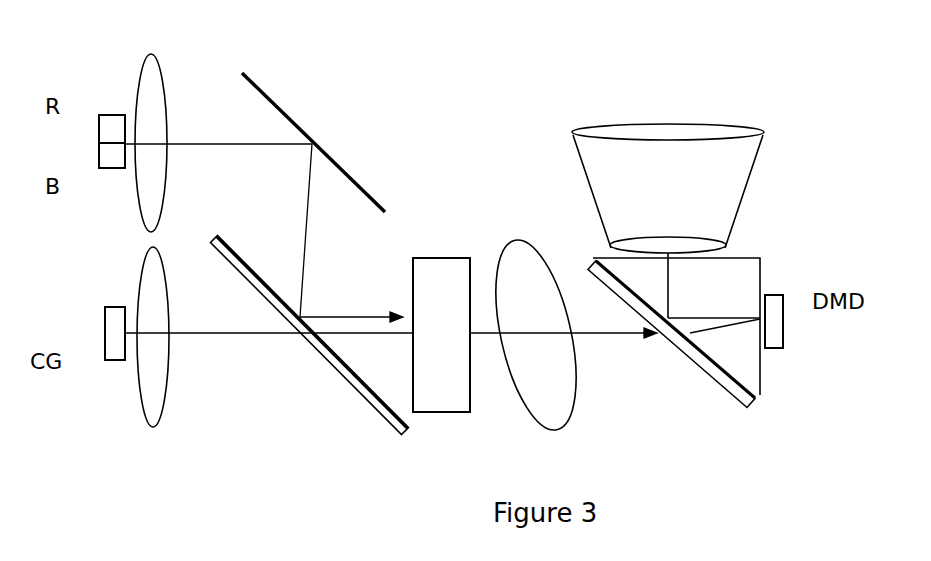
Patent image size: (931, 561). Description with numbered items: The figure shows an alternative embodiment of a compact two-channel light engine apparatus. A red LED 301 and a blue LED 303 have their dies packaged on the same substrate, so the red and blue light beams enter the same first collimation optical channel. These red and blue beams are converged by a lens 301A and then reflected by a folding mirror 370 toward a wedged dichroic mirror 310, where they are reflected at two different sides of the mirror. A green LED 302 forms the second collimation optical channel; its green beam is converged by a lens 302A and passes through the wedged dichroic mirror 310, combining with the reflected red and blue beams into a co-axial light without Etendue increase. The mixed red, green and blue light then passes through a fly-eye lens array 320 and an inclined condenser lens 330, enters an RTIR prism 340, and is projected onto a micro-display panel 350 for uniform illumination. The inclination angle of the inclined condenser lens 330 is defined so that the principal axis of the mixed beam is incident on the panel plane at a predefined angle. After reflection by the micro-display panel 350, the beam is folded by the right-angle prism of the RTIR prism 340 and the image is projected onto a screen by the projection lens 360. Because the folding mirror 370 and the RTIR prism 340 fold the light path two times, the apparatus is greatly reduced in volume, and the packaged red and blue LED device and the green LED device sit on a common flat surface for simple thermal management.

The red LED 301 is at (108, 112).
The blue LED 303 is at (105, 168).
The lens 301A is at (163, 68).
The green LED 302 is at (107, 360).
The lens 302A is at (170, 310).
The folding mirror 370 is at (285, 108).
The wedged dichroic mirror 310 is at (258, 270).
The fly-eye lens array 320 is at (427, 253).
The inclined condenser lens 330 is at (530, 227).
The RTIR prism 340 is at (747, 412).
The DMD panel 350 is at (787, 332).
The projection lens 360 is at (747, 187).